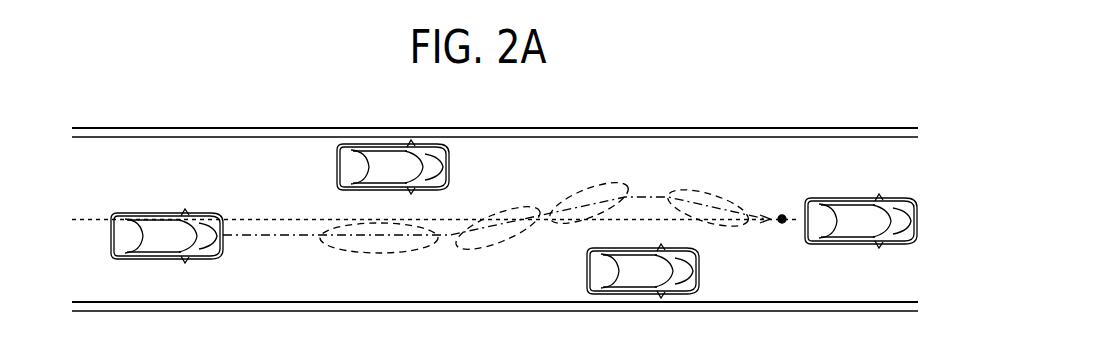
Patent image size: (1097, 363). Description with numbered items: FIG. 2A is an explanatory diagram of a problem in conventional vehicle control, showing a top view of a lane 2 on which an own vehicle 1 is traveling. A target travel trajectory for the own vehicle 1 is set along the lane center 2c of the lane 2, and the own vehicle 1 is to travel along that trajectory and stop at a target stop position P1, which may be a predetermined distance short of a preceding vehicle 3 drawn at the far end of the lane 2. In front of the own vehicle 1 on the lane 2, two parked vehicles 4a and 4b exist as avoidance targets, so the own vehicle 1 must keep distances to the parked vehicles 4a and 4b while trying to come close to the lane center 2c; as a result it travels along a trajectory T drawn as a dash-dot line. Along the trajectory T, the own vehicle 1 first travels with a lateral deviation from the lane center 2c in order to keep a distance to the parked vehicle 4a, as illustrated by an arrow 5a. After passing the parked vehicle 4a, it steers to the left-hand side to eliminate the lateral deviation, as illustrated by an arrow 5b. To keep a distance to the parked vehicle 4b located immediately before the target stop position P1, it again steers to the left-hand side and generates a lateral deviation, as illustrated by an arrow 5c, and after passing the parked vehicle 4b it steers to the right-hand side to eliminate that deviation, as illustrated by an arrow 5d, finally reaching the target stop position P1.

The own vehicle 1 is at (128, 213).
The lane 2 is at (124, 290).
The lane center 2c is at (256, 219).
The preceding vehicle 3 is at (856, 244).
The parked vehicle 4a is at (353, 146).
The parked vehicle 4b is at (603, 294).
The arrow 5a is at (345, 258).
The arrow 5b is at (496, 255).
The arrow 5c is at (584, 180).
The arrow 5d is at (733, 186).
The trajectory T is at (278, 237).
The target stop position P1 is at (782, 224).